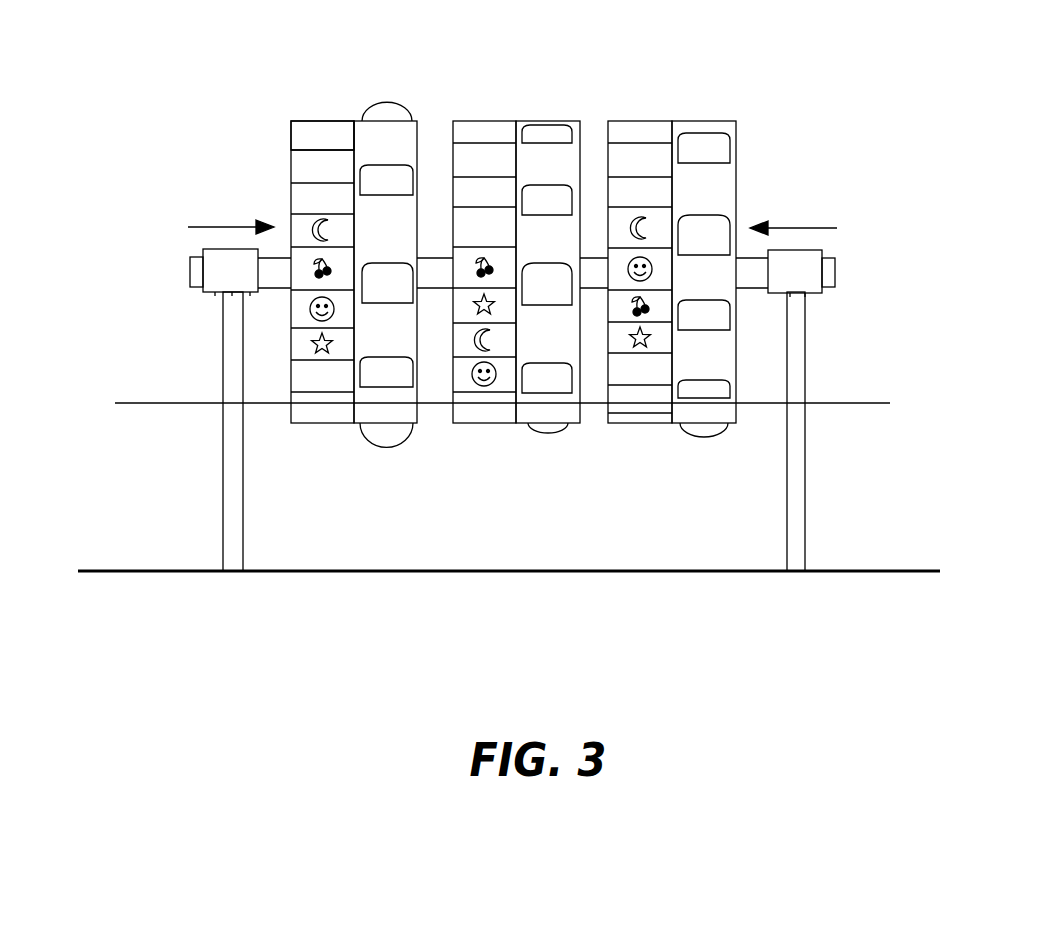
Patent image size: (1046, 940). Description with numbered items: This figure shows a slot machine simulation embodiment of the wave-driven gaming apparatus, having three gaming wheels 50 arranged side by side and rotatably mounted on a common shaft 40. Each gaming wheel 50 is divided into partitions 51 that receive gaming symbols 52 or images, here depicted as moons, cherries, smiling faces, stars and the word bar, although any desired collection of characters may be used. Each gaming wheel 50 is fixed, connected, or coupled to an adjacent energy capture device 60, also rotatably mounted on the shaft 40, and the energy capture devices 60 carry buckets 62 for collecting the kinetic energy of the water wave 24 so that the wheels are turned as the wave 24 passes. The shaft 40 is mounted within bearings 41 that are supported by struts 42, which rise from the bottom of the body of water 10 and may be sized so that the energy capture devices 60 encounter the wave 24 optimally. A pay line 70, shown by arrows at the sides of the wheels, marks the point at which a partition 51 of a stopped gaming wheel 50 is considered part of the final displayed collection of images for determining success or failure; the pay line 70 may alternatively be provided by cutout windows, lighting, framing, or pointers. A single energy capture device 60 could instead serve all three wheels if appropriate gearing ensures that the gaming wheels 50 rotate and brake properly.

The bottom of the body of water 10 is at (128, 570).
The wave 24 is at (152, 402).
The shaft 40 is at (190, 268).
The bearings 41 is at (213, 296).
The struts 42 is at (244, 512).
The gaming wheel 50 is at (454, 269).
The partitions 51 is at (311, 143).
The gaming symbols 52 is at (308, 297).
The energy capture device 60 is at (569, 258).
The buckets 62 is at (380, 118).
The pay line 70 is at (216, 220).